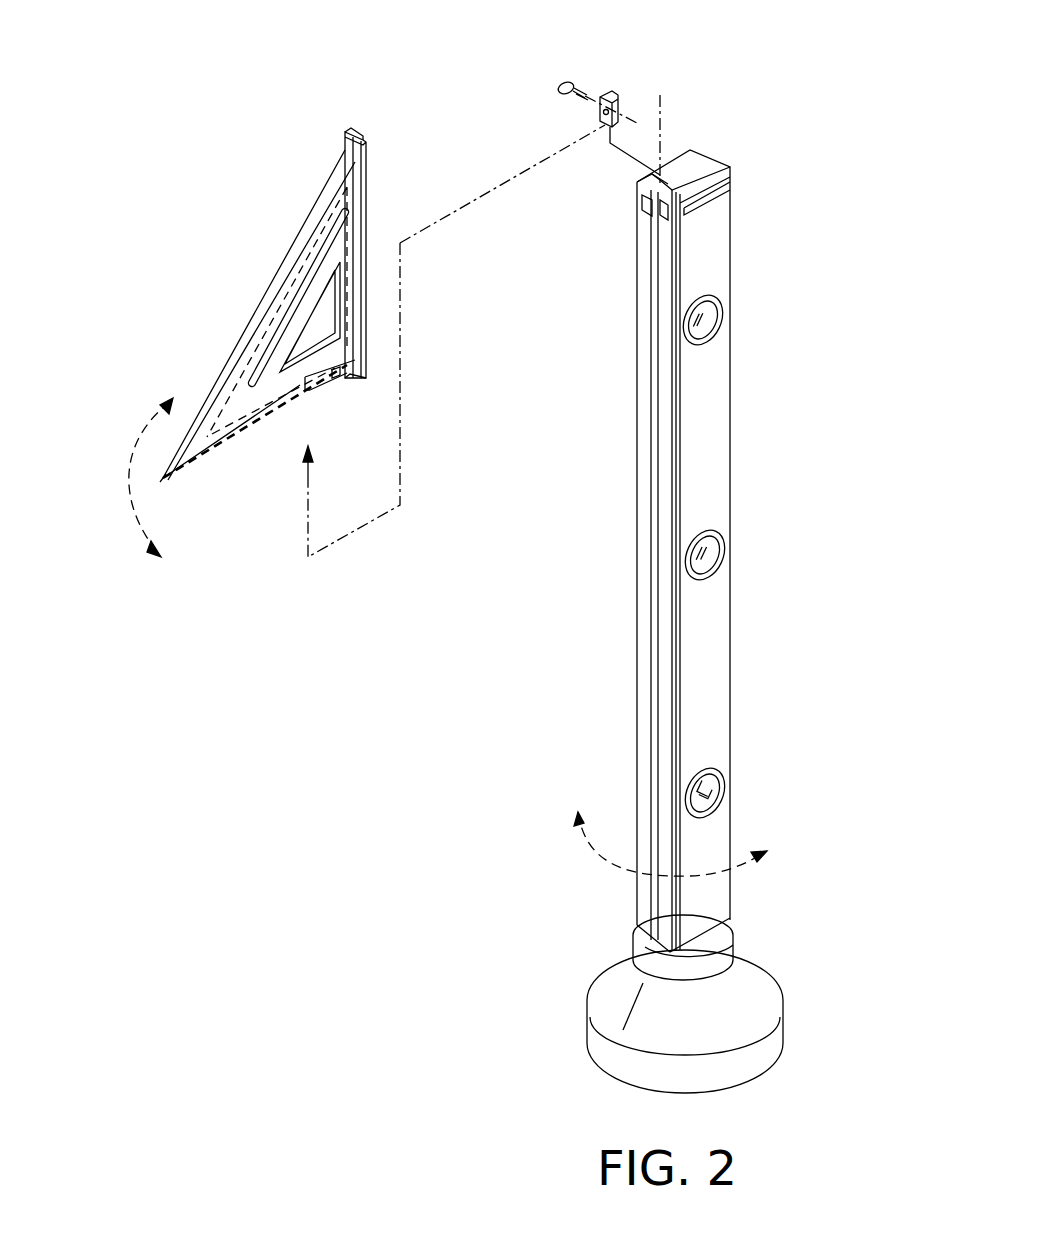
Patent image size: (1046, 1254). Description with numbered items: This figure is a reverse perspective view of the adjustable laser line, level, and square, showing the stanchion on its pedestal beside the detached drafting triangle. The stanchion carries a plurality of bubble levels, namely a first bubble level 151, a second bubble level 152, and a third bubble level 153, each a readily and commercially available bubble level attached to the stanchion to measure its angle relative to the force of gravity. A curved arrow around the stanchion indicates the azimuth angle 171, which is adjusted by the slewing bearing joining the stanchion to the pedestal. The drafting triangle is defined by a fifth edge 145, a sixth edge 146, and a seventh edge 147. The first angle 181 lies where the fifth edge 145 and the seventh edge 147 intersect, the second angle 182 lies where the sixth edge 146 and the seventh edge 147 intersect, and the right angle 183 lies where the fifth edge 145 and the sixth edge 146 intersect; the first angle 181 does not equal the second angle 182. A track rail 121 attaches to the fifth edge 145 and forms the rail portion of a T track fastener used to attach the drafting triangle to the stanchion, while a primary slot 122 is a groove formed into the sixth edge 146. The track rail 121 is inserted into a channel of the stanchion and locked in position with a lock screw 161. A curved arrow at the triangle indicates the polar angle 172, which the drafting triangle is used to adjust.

The track rail 121 is at (368, 253).
The primary slot 122 is at (256, 423).
The fifth edge 145 is at (367, 215).
The sixth edge 146 is at (322, 375).
The seventh edge 147 is at (262, 320).
The first bubble level 151 is at (715, 783).
The second bubble level 152 is at (720, 555).
The third bubble level 153 is at (708, 312).
The lock screw 161 is at (612, 95).
The azimuth angle 171 is at (600, 848).
The polar angle 172 is at (116, 477).
The first angle 181 is at (352, 148).
The second angle 182 is at (163, 478).
The right angle 183 is at (357, 348).